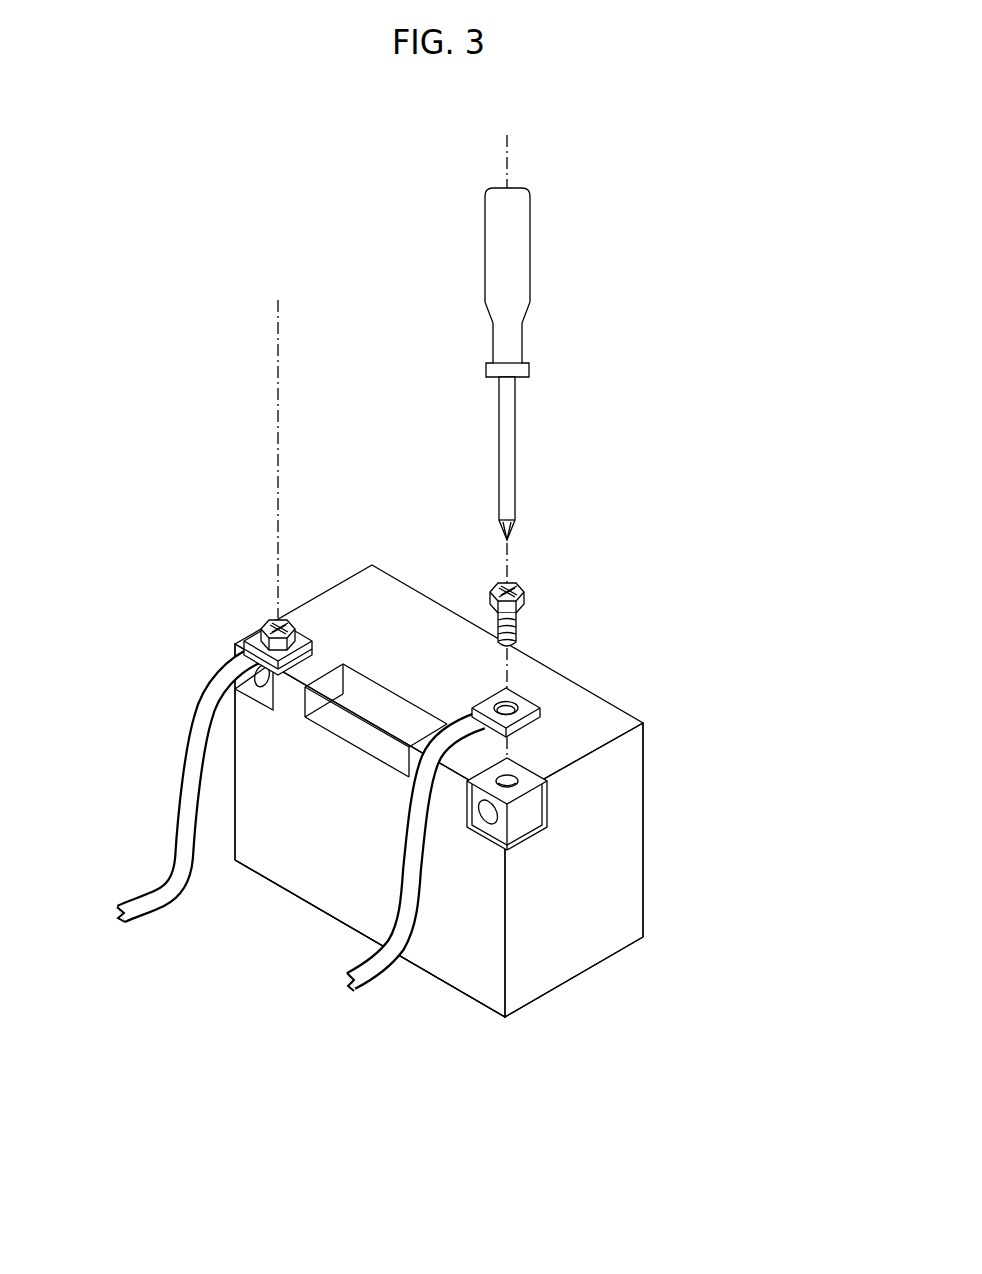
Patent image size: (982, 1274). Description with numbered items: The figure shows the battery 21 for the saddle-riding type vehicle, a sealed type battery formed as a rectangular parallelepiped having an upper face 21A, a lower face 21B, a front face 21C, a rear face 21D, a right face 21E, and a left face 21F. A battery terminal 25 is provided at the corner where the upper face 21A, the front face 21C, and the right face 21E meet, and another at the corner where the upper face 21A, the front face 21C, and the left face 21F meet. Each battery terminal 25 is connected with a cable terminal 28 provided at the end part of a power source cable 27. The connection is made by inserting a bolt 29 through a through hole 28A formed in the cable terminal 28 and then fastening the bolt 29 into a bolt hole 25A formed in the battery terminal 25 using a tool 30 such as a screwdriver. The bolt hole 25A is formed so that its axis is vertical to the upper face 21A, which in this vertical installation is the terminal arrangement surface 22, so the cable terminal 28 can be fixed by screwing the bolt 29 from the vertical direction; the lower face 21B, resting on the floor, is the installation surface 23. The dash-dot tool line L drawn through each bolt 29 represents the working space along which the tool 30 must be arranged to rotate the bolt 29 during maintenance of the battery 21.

The battery 21 is at (473, 794).
The upper face 21A is at (562, 713).
The lower face 21B is at (468, 998).
The front face 21C is at (350, 870).
The rear face 21D is at (643, 850).
The right face 21E is at (583, 923).
The left face 21F is at (235, 791).
The terminal arrangement surface 22 is at (372, 602).
The installation surface 23 is at (262, 878).
The battery terminal 25 is at (522, 810).
The bolt hole 25A is at (520, 770).
The power source cable 27 is at (190, 748).
The cable terminal 28 is at (525, 727).
The through hole 28A is at (510, 707).
The bolt 29 is at (525, 592).
The tool 30 is at (515, 292).
The tool line L is at (507, 150).